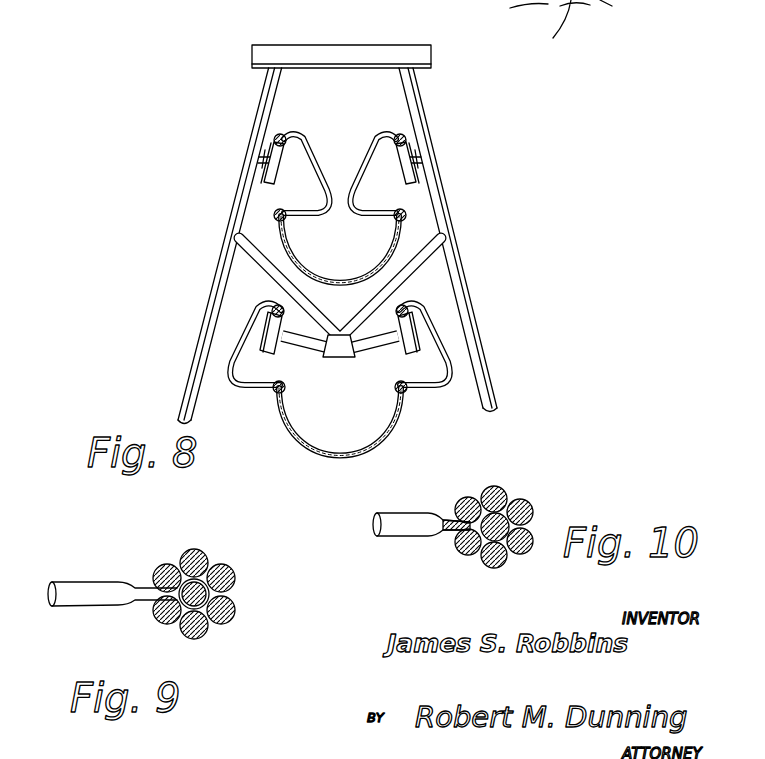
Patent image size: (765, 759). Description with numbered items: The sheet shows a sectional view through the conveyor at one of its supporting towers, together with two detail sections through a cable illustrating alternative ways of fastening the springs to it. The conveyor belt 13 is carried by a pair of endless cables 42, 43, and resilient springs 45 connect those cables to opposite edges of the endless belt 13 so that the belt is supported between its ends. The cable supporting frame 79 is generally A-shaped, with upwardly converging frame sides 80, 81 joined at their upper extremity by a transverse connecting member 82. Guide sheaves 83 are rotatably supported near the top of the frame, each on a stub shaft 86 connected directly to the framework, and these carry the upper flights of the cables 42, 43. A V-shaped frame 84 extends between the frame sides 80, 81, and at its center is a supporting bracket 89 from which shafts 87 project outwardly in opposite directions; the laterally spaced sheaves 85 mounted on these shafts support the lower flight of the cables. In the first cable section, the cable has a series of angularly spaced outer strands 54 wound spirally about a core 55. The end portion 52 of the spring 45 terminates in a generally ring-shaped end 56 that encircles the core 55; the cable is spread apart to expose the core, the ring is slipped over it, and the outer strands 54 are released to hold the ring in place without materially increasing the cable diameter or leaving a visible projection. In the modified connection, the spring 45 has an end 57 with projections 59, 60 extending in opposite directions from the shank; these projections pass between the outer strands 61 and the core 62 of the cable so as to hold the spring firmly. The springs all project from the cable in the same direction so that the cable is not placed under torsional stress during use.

In FIG. 8, the endless conveyor belt 13 is at (363, 281).
In FIG. 8, the endless cable 42 is at (275, 138).
In FIG. 8, the endless cable 43 is at (405, 140).
In FIG. 8, the resilient spring 45 is at (362, 158).
In FIG. 9, the resilient spring 45 is at (107, 578).
In FIG. 10, the resilient spring 45 is at (410, 512).
In FIG. 9, the spring end portion 52 is at (77, 600).
In FIG. 9, the outer strands 54 is at (225, 613).
In FIG. 9, the core 55 is at (195, 608).
In FIG. 9, the ring-shaped end 56 is at (226, 618).
In FIG. 10, the spring end 57 is at (470, 528).
In FIG. 10, the projection 59 is at (472, 496).
In FIG. 10, the projection 60 is at (476, 541).
In FIG. 10, the outer strands 61 is at (534, 532).
In FIG. 10, the core 62 is at (509, 553).
In FIG. 8, the cable supporting frame 79 is at (228, 213).
In FIG. 8, the frame side 80 is at (190, 368).
In FIG. 8, the frame side 81 is at (477, 360).
In FIG. 8, the transverse connecting member 82 is at (366, 52).
In FIG. 8, the guide sheave 83 is at (268, 172).
In FIG. 8, the V-shaped frame 84 is at (258, 275).
In FIG. 8, the sheave 85 is at (296, 345).
In FIG. 8, the stub shaft 86 is at (262, 157).
In FIG. 8, the shaft 87 is at (374, 340).
In FIG. 8, the supporting bracket 89 is at (337, 350).